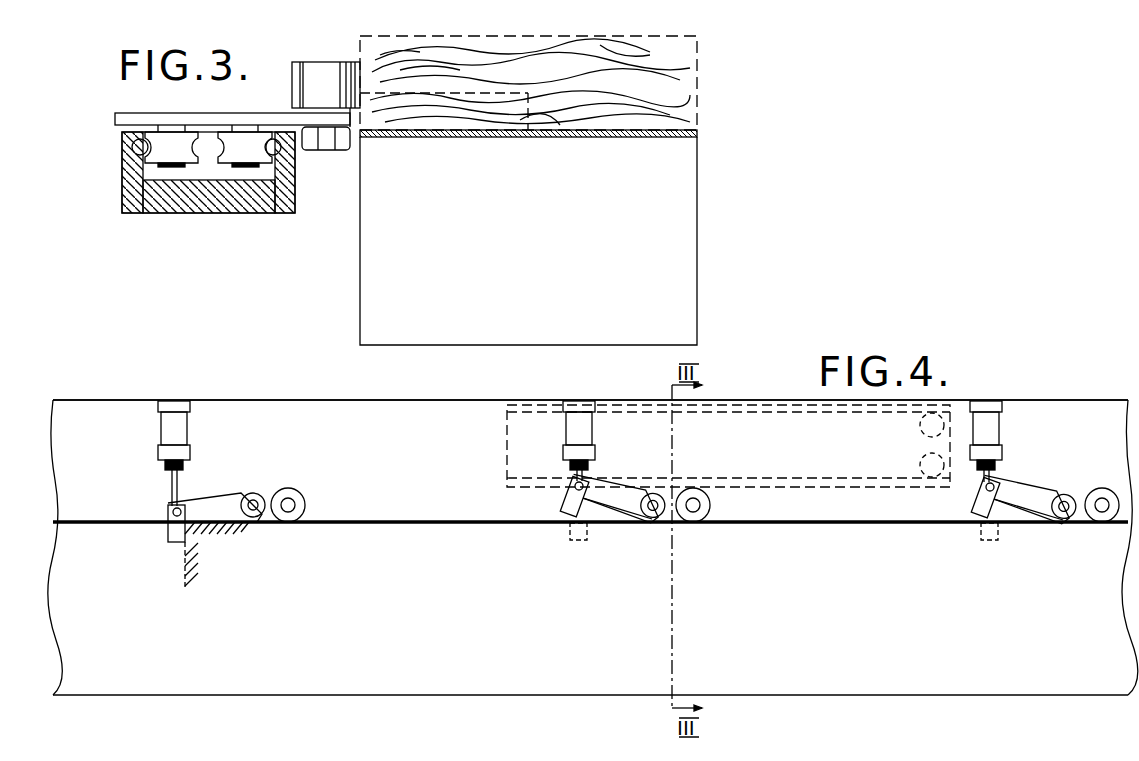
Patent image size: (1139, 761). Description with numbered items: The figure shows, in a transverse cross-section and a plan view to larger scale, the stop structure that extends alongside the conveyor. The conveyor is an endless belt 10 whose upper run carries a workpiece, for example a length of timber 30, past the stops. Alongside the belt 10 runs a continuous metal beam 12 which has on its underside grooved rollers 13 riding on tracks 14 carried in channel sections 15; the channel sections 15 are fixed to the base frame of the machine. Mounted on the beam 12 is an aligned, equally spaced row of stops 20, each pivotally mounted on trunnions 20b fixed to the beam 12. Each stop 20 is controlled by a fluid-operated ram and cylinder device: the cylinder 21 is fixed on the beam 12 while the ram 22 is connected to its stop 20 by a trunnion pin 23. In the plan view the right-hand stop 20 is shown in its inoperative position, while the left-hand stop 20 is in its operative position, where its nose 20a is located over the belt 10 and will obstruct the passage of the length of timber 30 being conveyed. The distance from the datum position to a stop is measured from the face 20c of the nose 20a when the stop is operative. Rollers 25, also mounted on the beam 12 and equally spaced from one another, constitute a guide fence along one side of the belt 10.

In FIG. 3, the endless belt 10 is at (647, 133).
In FIG. 4, the endless belt 10 is at (808, 662).
In FIG. 3, the continuous metal beam 12 is at (115, 116).
In FIG. 4, the continuous metal beam 12 is at (257, 412).
In FIG. 3, the grooved rollers 13 is at (175, 147).
In FIG. 4, the grooved rollers 13 is at (952, 403).
In FIG. 3, the tracks 14 is at (135, 148).
In FIG. 3, the channel sections 15 is at (295, 176).
In FIG. 4, the channel sections 15 is at (740, 412).
In FIG. 4, the stop 20 is at (207, 507).
In FIG. 4, the nose 20a is at (977, 520).
In FIG. 4, the trunnions 20b is at (256, 496).
In FIG. 4, the face 20c is at (588, 508).
In FIG. 4, the cylinder 21 is at (172, 406).
In FIG. 4, the ram 22 is at (170, 483).
In FIG. 4, the trunnion pin 23 is at (170, 511).
In FIG. 3, the rollers 25 is at (327, 62).
In FIG. 4, the rollers 25 is at (307, 497).
In FIG. 3, the length of timber 30 is at (502, 35).
In FIG. 4, the length of timber 30 is at (183, 557).